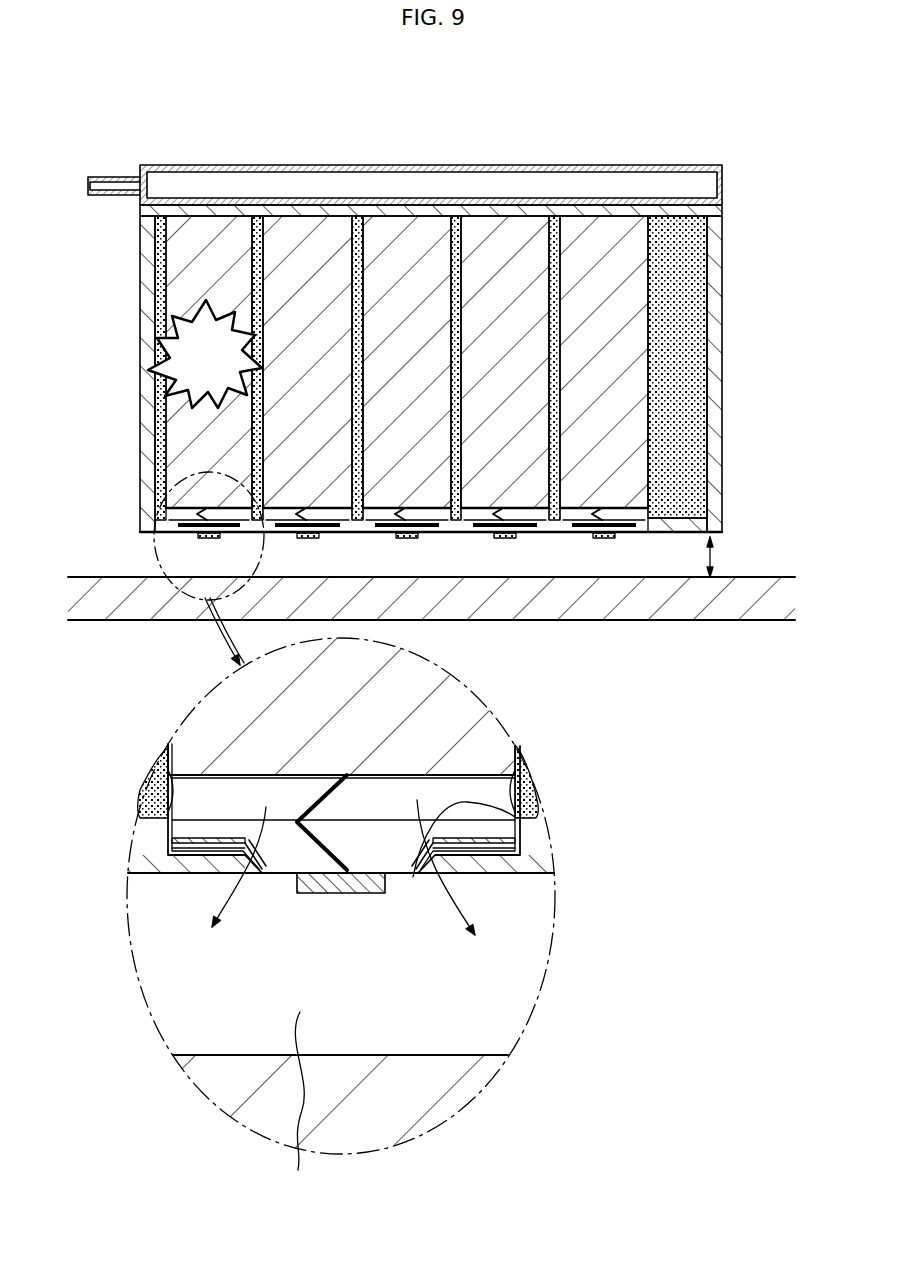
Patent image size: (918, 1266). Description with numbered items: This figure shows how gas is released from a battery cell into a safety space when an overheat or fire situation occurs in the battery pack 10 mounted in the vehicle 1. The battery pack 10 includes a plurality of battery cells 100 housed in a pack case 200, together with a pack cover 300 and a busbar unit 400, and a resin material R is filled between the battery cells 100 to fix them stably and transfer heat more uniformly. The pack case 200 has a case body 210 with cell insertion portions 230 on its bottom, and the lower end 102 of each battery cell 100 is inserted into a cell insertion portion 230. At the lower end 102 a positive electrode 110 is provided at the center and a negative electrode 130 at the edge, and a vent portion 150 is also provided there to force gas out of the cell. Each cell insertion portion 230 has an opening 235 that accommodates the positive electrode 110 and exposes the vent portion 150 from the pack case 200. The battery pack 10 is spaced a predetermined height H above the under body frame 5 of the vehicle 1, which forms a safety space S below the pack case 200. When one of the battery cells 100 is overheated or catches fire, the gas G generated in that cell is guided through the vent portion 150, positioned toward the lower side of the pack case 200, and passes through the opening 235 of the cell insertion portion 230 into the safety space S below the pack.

The vehicle 1 is at (185, 130).
The battery pack 10 is at (767, 138).
The pack cover 300 is at (730, 193).
The pack case 200 is at (730, 296).
The battery cell 100 is at (648, 348).
The resin material R is at (562, 405).
The under body frame 5 is at (768, 577).
The busbar unit 400 is at (637, 533).
The predetermined height H is at (718, 557).
The case body 210 is at (543, 837).
The opening 235 is at (515, 813).
The cell insertion portion 230 is at (480, 862).
The negative electrode 130 is at (170, 858).
The lower end 102 is at (223, 845).
The vent portion 150 is at (256, 868).
The positive electrode 110 is at (370, 893).
The gas G is at (363, 888).
The safety space S is at (298, 1102).